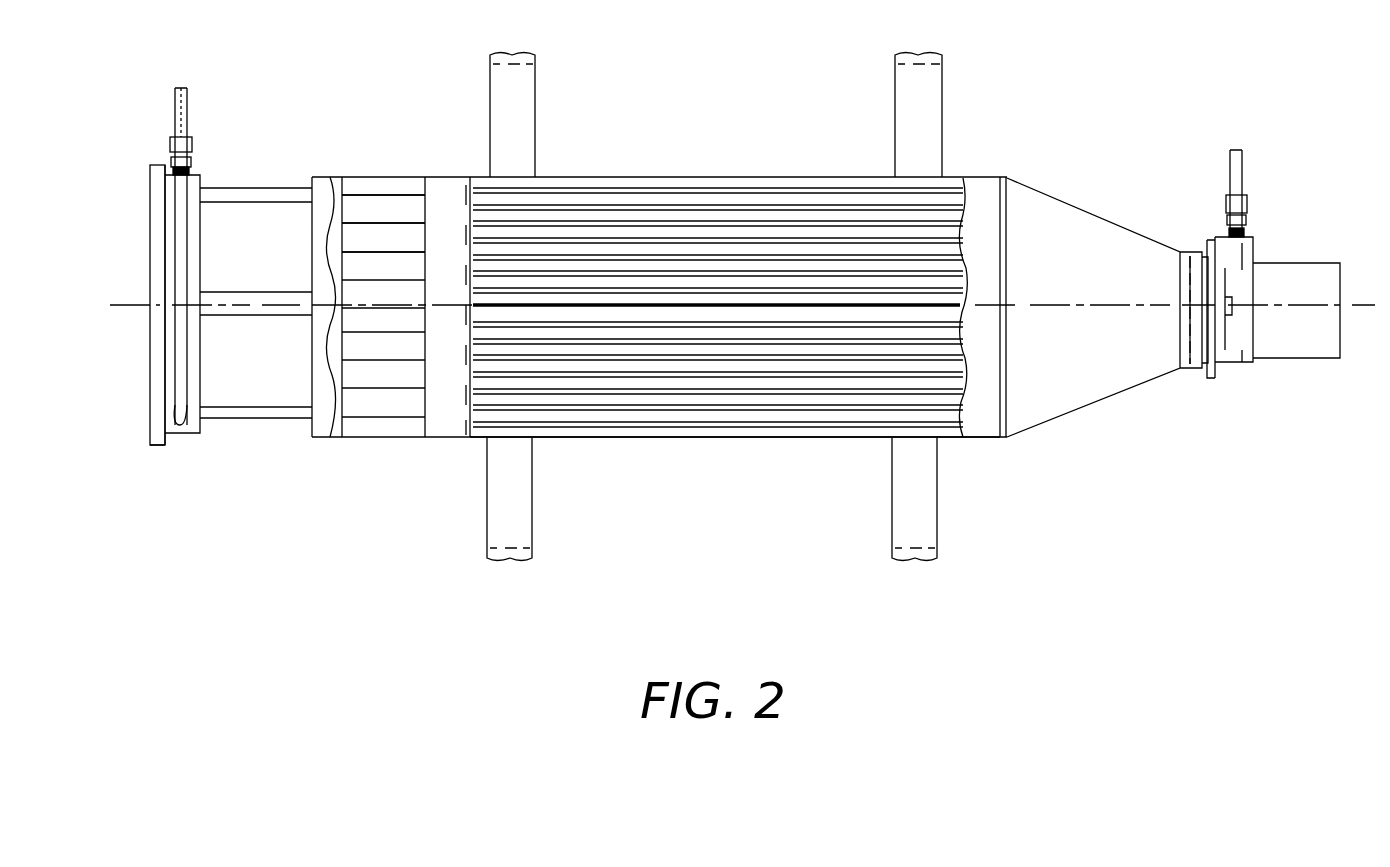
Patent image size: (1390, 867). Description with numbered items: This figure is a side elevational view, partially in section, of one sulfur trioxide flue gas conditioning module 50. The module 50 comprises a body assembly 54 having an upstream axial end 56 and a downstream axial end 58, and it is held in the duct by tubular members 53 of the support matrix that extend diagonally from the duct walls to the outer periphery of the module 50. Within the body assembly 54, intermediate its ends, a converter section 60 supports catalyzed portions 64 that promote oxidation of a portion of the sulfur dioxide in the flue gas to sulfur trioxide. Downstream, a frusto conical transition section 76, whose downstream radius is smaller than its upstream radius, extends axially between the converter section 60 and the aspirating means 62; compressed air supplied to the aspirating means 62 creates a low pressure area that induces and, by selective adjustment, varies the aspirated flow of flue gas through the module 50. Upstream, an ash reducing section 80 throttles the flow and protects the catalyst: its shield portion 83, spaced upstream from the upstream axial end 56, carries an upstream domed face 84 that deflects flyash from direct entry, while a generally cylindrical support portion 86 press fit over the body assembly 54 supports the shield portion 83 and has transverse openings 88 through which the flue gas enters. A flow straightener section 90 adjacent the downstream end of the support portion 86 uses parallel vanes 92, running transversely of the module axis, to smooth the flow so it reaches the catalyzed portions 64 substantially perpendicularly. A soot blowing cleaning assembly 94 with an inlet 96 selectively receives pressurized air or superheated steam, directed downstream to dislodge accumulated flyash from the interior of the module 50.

The flue gas conditioning module 50 is at (1053, 433).
The tubular members 53 is at (535, 95).
The body assembly 54 is at (700, 177).
The upstream axial end 56 is at (452, 176).
The downstream axial end 58 is at (1100, 218).
The converter section 60 is at (768, 437).
The aspirating means 62 is at (1253, 240).
The catalyzed portions 64 is at (648, 382).
The frusto conical transition section 76 is at (1117, 367).
The ash reducing section 80 is at (200, 175).
The shield portion 83 is at (157, 432).
The upstream domed face 84 is at (150, 215).
The support portion 86 is at (320, 405).
The openings 88 is at (262, 360).
The flow straightener section 90 is at (392, 412).
The parallel vanes 92 is at (402, 250).
The cleaning assembly 94 is at (170, 142).
The inlet 96 is at (183, 415).